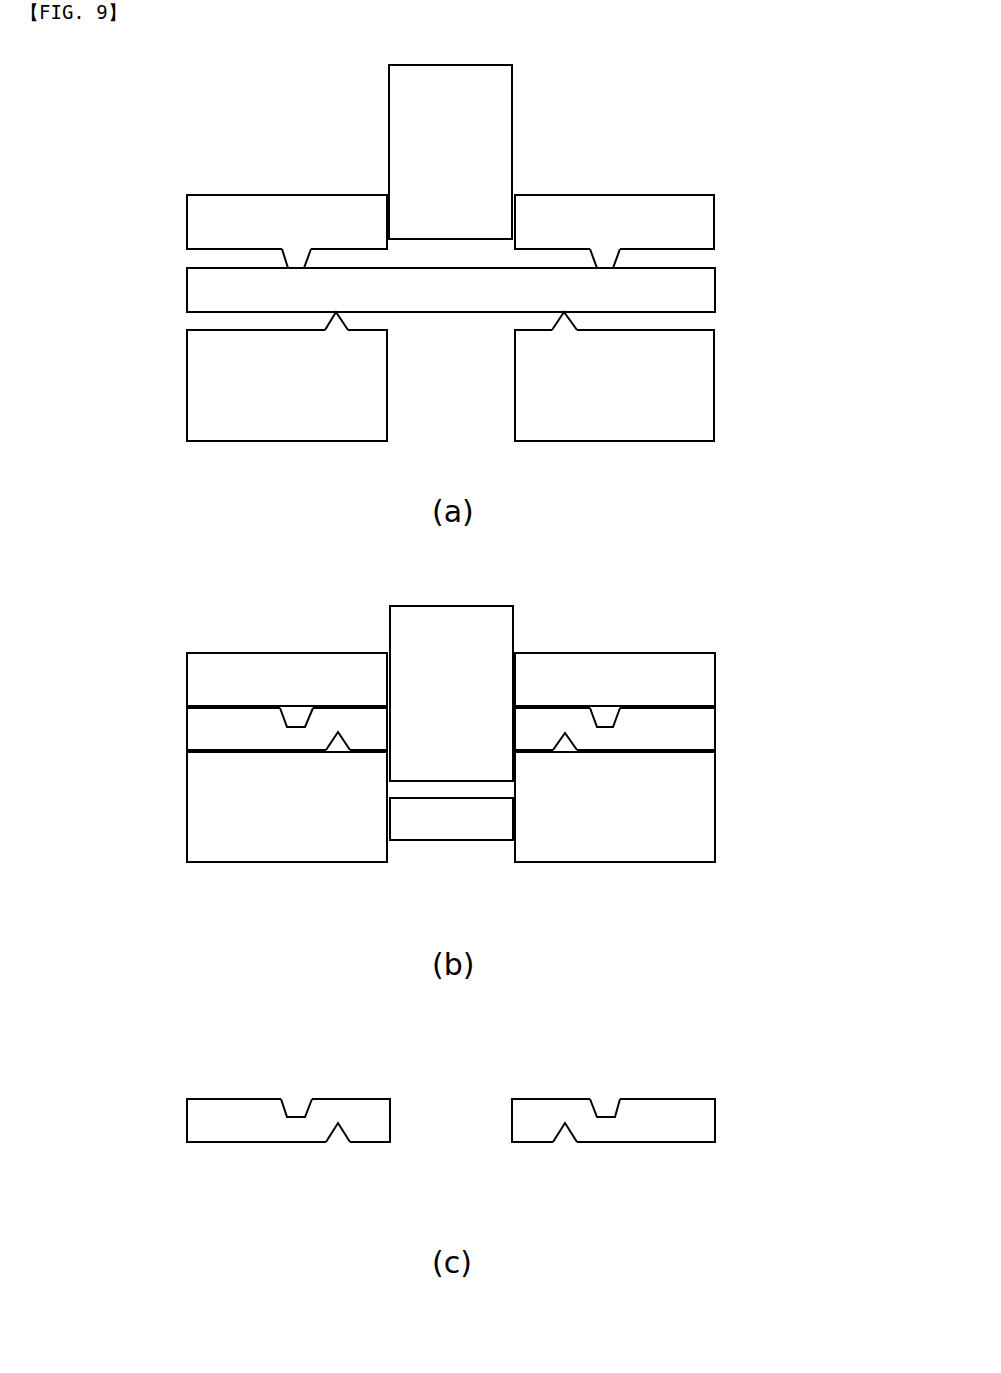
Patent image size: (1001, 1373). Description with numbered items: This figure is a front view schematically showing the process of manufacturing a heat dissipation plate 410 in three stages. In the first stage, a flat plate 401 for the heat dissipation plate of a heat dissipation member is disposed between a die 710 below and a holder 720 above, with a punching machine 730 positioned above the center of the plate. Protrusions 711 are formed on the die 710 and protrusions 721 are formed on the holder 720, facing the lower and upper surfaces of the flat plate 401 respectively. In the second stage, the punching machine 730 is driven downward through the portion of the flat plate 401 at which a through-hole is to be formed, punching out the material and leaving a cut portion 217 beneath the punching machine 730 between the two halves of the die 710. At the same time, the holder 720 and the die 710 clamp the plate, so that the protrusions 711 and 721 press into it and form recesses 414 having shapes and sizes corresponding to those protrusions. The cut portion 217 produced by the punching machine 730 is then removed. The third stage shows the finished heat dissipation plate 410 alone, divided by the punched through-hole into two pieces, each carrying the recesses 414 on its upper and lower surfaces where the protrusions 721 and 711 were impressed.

The punching machine 730 is at (493, 120).
The holder 720 is at (198, 215).
The protrusion 721 is at (285, 258).
The flat plate 401 is at (705, 288).
The protrusion 711 is at (327, 325).
The die 710 is at (218, 380).
The heat dissipation plate 410 is at (705, 742).
The recesses 414 is at (615, 735).
The cut portion 217 is at (460, 823).